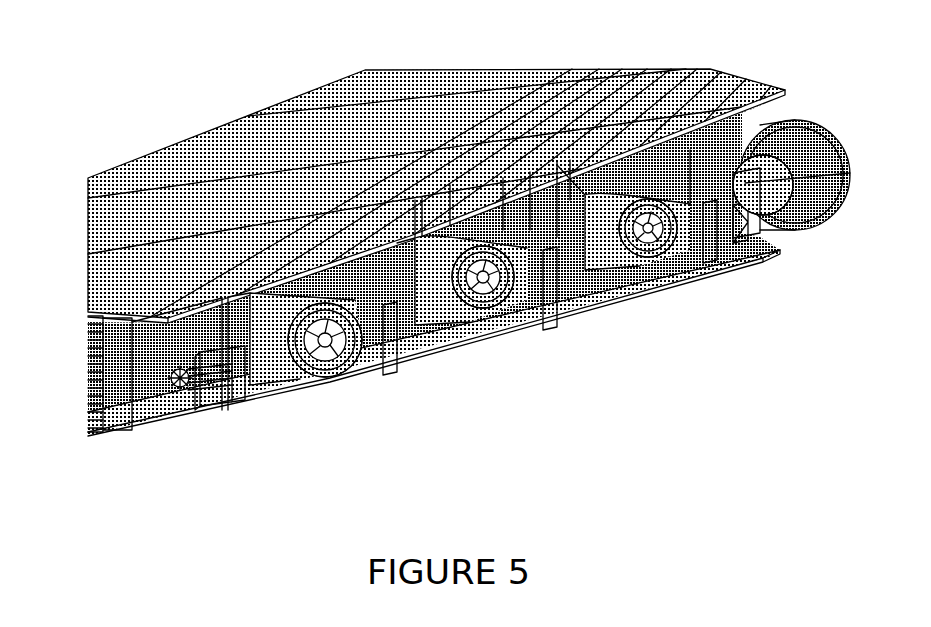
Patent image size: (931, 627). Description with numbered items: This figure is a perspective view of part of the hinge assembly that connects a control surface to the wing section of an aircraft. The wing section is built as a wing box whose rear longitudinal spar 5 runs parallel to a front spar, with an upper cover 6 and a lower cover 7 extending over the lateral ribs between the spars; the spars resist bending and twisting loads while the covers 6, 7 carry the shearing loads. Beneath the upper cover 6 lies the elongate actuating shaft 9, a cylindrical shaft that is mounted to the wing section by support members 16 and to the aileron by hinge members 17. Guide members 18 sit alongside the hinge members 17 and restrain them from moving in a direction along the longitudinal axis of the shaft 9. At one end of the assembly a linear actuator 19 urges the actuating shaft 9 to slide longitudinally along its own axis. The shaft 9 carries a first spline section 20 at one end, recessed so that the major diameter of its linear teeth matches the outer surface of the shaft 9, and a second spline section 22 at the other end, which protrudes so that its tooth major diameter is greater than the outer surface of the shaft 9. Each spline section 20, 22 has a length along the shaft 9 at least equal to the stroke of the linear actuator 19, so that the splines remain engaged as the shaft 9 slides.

The rear longitudinal spar 5 is at (112, 392).
The upper cover 6 is at (150, 165).
The lower cover 7 is at (97, 366).
The elongate actuating shaft 9 is at (588, 250).
The support member 16 is at (186, 368).
The hinge member 17 is at (373, 357).
The guide member 18 is at (283, 368).
The linear actuator 19 is at (807, 160).
The first spline section 20 is at (748, 240).
The second spline section 22 is at (175, 390).